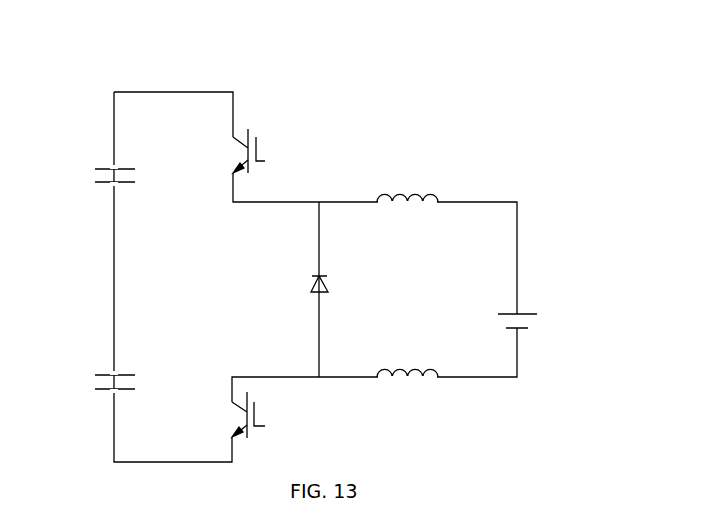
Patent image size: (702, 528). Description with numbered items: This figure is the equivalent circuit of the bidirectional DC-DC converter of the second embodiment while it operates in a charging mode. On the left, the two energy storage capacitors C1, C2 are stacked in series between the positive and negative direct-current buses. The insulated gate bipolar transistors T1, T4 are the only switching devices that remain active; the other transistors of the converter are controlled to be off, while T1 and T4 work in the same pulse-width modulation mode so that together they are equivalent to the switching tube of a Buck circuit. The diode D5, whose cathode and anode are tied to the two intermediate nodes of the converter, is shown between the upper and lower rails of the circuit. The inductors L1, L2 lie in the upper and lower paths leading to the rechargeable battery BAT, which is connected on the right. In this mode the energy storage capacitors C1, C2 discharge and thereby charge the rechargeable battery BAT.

The energy storage capacitor C1 is at (100, 175).
The energy storage capacitor C2 is at (99, 382).
The insulated gate bipolar transistor T1 is at (259, 151).
The insulated gate bipolar transistor T4 is at (256, 415).
The diode D5 is at (307, 289).
The inductor L1 is at (407, 187).
The inductor L2 is at (407, 360).
The rechargeable battery BAT is at (538, 320).